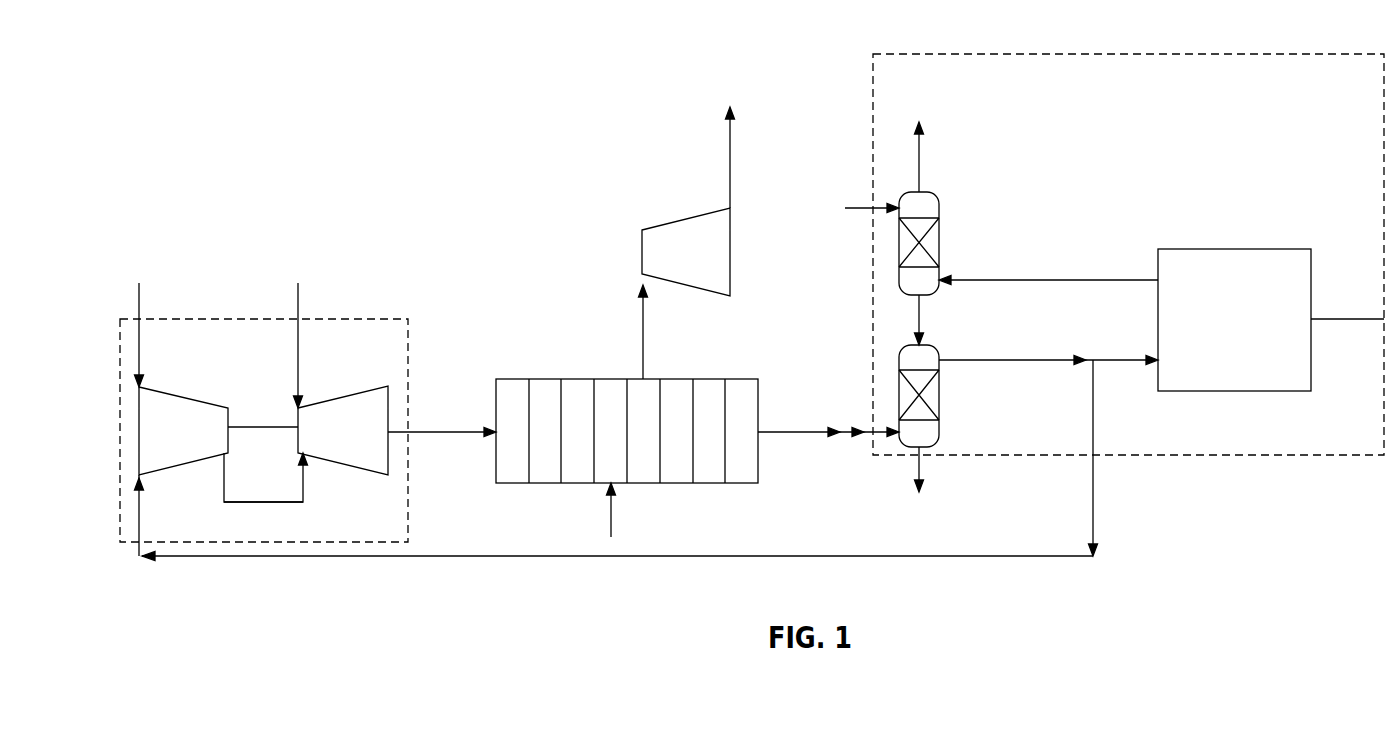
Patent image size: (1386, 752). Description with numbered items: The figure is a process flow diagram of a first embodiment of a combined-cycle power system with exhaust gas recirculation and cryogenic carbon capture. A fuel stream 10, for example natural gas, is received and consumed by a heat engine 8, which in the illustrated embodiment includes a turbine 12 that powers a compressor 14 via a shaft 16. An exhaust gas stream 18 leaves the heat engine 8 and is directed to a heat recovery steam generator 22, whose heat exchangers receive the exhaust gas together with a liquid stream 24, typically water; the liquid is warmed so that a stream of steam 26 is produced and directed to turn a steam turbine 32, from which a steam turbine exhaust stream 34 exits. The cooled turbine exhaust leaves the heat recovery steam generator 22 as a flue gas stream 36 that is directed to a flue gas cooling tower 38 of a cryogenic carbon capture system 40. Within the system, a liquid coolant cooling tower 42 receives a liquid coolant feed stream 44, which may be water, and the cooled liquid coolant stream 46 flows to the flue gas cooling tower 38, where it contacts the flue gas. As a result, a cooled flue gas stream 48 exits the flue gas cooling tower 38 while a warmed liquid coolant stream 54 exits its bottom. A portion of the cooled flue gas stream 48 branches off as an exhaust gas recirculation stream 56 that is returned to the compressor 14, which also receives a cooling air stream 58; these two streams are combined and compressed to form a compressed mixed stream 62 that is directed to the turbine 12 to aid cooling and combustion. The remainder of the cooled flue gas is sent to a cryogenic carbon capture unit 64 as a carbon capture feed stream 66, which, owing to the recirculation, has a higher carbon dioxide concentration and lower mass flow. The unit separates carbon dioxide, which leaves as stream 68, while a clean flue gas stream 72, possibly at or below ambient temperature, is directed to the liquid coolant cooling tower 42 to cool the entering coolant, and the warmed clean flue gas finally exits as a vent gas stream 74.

The heat engine 8 is at (360, 318).
The fuel stream 10 is at (298, 300).
The turbine 12 is at (352, 395).
The compressor 14 is at (183, 396).
The shaft 16 is at (263, 428).
The exhaust gas stream 18 is at (454, 433).
The heat recovery steam generator 22 is at (556, 379).
The liquid stream 24 is at (611, 523).
The stream of steam 26 is at (644, 311).
The steam turbine 32 is at (687, 218).
The steam turbine exhaust stream 34 is at (730, 157).
The flue gas stream 36 is at (808, 446).
The flue gas cooling tower 38 is at (898, 367).
The cryogenic carbon capture system 40 is at (967, 54).
The liquid coolant cooling tower 42 is at (940, 205).
The liquid coolant feed stream 44 is at (877, 208).
The cooled liquid coolant stream 46 is at (919, 308).
The cooled flue gas stream 48 is at (1032, 357).
The warmed liquid coolant stream 54 is at (919, 462).
The exhaust gas recirculation stream 56 is at (1093, 482).
The cooling air stream 58 is at (140, 304).
The compressed mixed stream 62 is at (263, 503).
The cryogenic carbon capture unit 64 is at (1253, 249).
The carbon capture feed stream 66 is at (1122, 362).
The carbon dioxide stream 68 is at (1335, 318).
The clean flue gas stream 72 is at (1127, 280).
The vent gas stream 74 is at (919, 167).